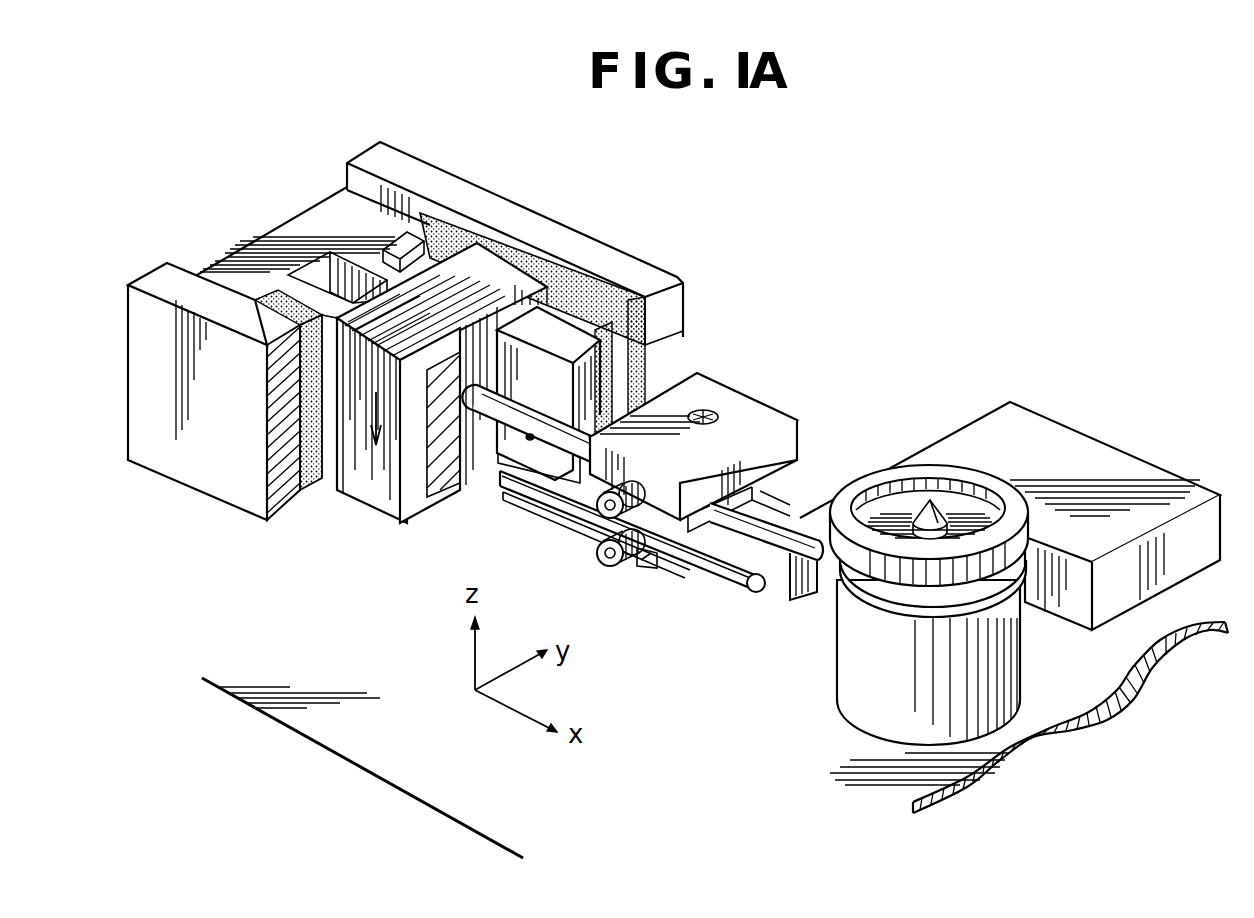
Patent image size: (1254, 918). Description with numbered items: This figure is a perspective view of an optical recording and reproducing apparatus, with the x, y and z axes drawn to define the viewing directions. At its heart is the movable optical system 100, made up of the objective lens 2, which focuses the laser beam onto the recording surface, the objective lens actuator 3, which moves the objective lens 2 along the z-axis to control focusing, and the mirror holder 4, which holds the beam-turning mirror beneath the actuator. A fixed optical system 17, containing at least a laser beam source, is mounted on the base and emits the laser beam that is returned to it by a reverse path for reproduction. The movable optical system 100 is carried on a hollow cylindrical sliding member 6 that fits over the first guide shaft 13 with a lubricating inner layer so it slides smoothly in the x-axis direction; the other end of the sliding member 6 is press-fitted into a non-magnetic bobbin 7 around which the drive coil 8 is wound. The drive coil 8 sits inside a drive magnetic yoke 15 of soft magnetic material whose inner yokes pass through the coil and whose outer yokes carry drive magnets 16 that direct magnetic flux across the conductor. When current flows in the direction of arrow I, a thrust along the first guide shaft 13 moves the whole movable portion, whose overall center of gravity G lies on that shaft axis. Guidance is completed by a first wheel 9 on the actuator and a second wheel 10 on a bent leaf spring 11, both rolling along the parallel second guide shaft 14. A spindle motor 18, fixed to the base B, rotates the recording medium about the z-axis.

The movable optical system 100 is at (662, 474).
The objective lens 2 is at (705, 411).
The objective lens actuator 3 is at (707, 424).
The mirror holder 4 is at (762, 509).
The sliding member 6 is at (531, 413).
The overall center of gravity G is at (530, 432).
The bobbin 7 is at (430, 512).
The drive coil 8 is at (372, 438).
The arrow indicating current direction I is at (368, 418).
The first wheel 9 is at (583, 517).
The second wheel 10 is at (610, 567).
The leaf spring 11 is at (650, 560).
The first guide shaft 13 is at (773, 548).
The second guide shaft 14 is at (727, 581).
The drive magnetic yoke 15 is at (253, 243).
The drive magnets 16 is at (520, 243).
The fixed optical system 17 is at (1030, 420).
The spindle motor 18 is at (1020, 680).
The base B is at (1112, 695).